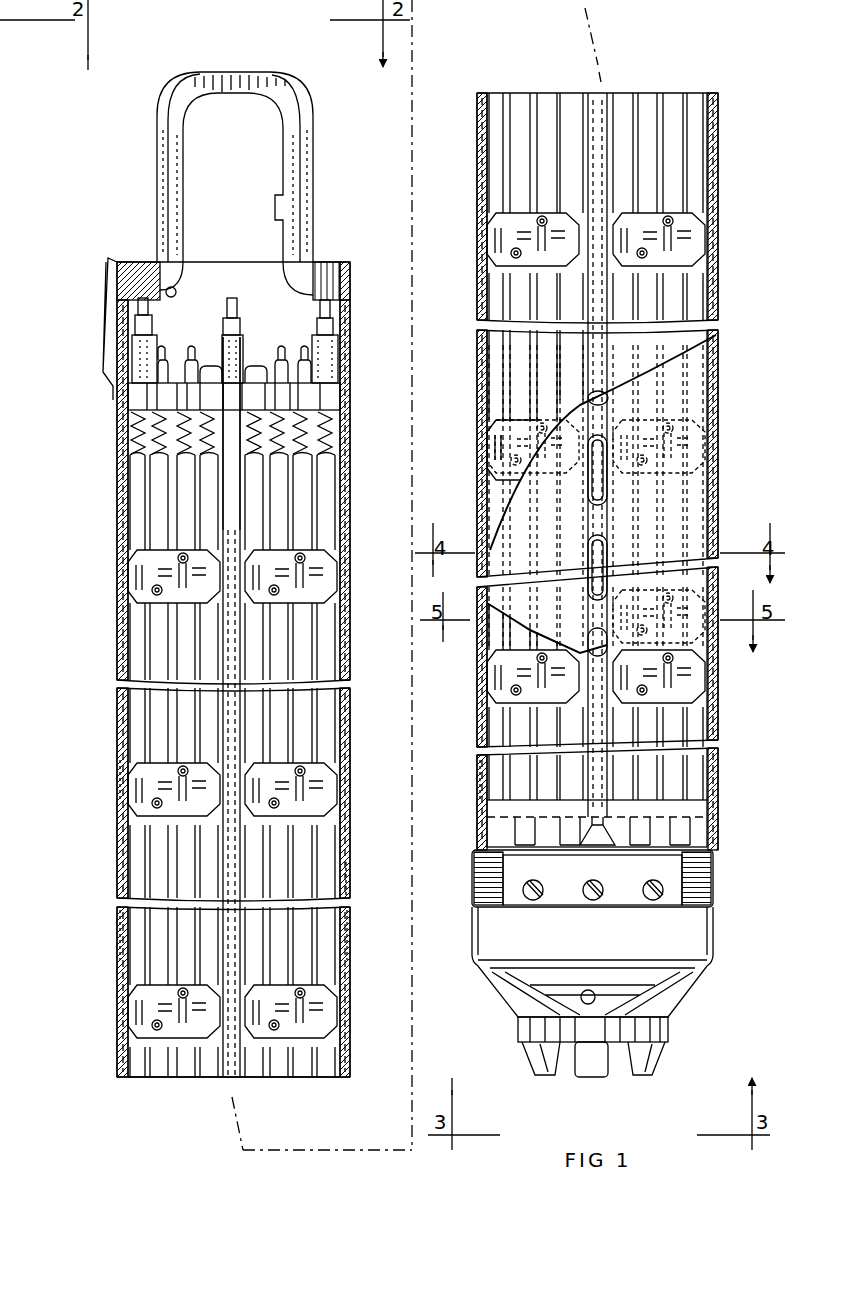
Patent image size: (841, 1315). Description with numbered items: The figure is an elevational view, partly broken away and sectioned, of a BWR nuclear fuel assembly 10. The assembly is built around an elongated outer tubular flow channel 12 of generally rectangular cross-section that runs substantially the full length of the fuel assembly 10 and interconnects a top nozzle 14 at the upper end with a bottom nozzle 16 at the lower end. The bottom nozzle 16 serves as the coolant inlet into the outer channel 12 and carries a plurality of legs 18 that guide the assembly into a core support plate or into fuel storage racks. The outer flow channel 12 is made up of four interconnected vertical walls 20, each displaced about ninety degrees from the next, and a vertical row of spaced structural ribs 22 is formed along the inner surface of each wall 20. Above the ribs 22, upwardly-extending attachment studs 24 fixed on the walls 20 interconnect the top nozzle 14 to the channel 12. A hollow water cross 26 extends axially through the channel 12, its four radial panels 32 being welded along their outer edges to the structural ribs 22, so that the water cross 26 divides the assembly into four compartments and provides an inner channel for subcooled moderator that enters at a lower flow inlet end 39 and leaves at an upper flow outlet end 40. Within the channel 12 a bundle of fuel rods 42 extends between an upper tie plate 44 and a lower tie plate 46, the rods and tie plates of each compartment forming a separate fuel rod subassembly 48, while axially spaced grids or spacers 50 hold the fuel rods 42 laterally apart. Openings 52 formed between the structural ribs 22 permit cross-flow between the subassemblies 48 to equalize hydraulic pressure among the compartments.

The nuclear fuel assembly 10 is at (106, 256).
The outer tubular flow channel 12 is at (114, 486).
The top nozzle 14 is at (351, 282).
The bottom nozzle 16 is at (680, 950).
The legs 18 is at (630, 1080).
The vertical walls 20 is at (125, 912).
The structural ribs 22 is at (127, 545).
The attachment studs 24 is at (143, 297).
The hollow water cross 26 is at (244, 640).
The radial panels 32 is at (243, 958).
The lower flow inlet end 39 is at (595, 815).
The upper flow outlet end 40 is at (242, 530).
The fuel rods 42 is at (158, 717).
The upper tie plate 44 is at (135, 398).
The lower tie plate 46 is at (497, 828).
The fuel rod subassembly 48 is at (138, 1082).
The grids or spacers 50 is at (137, 590).
The openings 52 is at (341, 500).